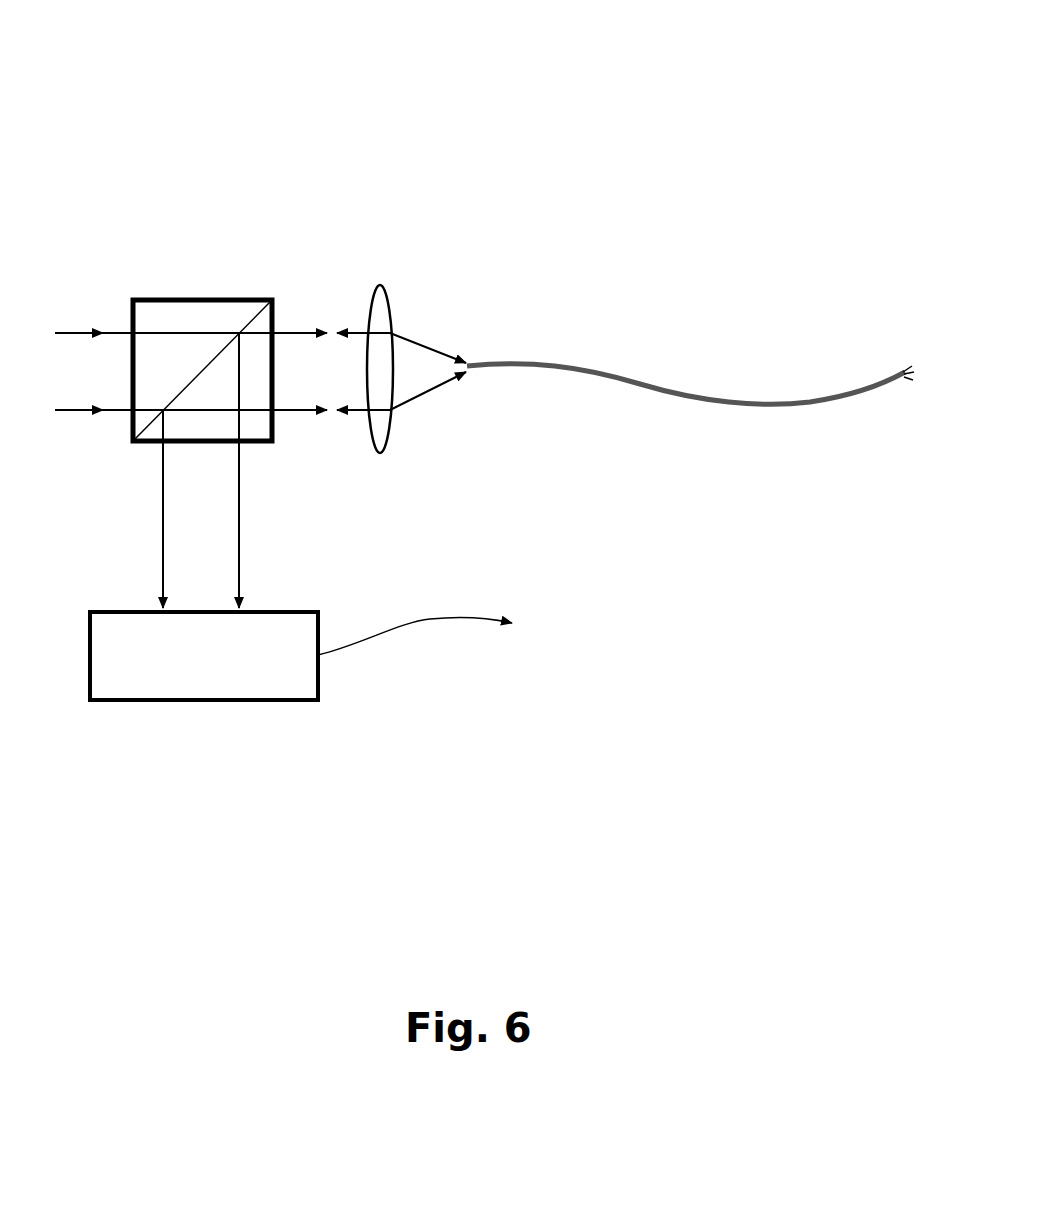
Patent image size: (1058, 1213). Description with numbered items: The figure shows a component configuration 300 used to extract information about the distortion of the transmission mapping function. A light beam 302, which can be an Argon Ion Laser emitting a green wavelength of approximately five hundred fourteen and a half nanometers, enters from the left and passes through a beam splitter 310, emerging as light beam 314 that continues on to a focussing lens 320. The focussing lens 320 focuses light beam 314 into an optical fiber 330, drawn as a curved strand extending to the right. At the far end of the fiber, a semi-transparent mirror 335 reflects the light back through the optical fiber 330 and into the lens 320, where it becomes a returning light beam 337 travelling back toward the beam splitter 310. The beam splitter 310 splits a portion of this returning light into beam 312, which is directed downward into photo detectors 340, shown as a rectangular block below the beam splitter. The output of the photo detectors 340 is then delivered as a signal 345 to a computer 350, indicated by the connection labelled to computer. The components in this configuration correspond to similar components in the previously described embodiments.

The component configuration 300 is at (290, 74).
The light beam 302 is at (88, 369).
The beam splitter 310 is at (243, 330).
The beam 312 is at (200, 538).
The light beam 314 is at (292, 330).
The focussing lens 320 is at (388, 297).
The optical fiber 330 is at (530, 372).
The semi-transparent mirror 335 is at (905, 383).
The light beam 337 is at (358, 415).
The photo detectors 340 is at (297, 610).
The signal 345 is at (423, 618).
The computer 350 is at (538, 610).